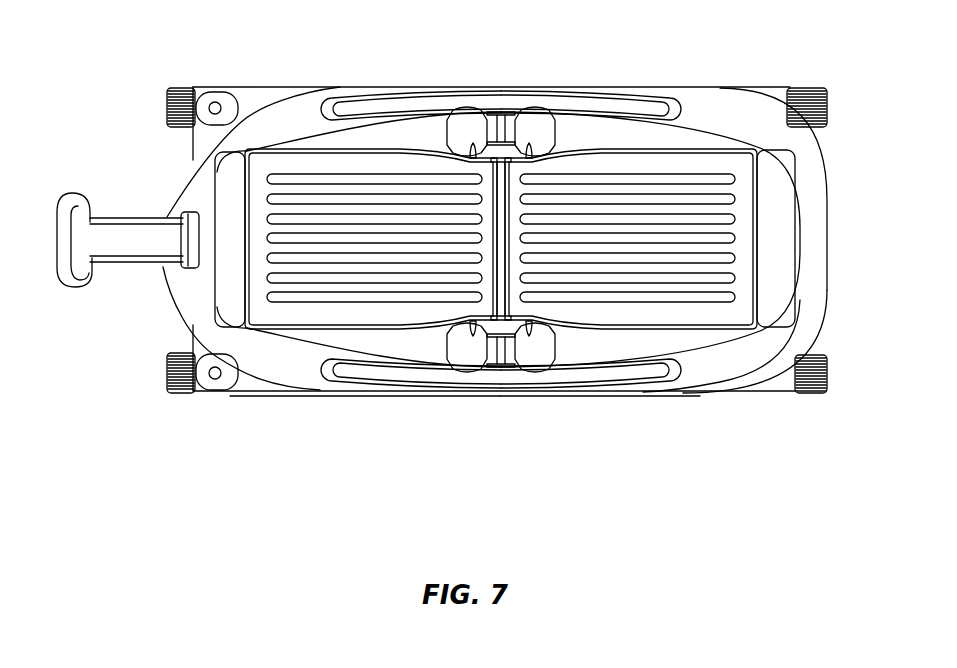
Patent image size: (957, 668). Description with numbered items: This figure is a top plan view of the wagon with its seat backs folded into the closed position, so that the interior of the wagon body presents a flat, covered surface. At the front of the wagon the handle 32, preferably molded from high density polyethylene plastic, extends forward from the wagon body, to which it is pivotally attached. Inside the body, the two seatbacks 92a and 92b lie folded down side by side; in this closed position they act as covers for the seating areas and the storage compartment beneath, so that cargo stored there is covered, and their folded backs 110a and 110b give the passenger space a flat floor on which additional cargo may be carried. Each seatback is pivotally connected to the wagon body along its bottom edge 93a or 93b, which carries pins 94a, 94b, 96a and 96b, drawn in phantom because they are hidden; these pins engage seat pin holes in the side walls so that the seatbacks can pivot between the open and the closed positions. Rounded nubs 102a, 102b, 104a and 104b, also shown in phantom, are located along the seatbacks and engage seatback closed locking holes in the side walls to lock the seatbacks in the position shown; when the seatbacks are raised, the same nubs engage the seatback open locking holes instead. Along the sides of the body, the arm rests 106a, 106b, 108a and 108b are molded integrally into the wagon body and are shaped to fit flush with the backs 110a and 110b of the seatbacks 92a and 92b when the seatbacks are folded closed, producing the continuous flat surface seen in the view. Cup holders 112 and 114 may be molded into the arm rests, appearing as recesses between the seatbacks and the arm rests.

The handle 32 is at (137, 216).
The seatback 92a is at (253, 330).
The seatback 92b is at (620, 322).
The bottom edge of seatback 93a is at (240, 252).
The bottom edge of seatback 93b is at (760, 245).
The pin 94a is at (257, 338).
The pin 94b is at (740, 337).
The pin 96a is at (254, 147).
The pin 96b is at (742, 140).
The rounded nub 102a is at (338, 335).
The rounded nub 102b is at (677, 337).
The rounded nub 104a is at (340, 147).
The rounded nub 104b is at (677, 147).
The arm rest 106a is at (397, 348).
The arm rest 106b is at (576, 350).
The arm rest 108a is at (418, 127).
The arm rest 108b is at (614, 124).
The back of seatback 110a is at (371, 239).
The back of seatback 110b is at (631, 239).
The cup holder 112 is at (470, 348).
The cup holder 114 is at (545, 125).